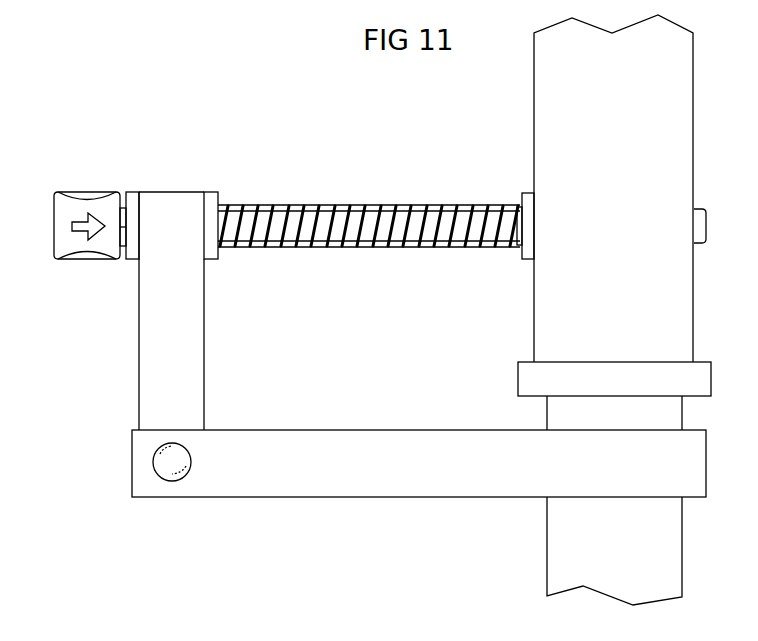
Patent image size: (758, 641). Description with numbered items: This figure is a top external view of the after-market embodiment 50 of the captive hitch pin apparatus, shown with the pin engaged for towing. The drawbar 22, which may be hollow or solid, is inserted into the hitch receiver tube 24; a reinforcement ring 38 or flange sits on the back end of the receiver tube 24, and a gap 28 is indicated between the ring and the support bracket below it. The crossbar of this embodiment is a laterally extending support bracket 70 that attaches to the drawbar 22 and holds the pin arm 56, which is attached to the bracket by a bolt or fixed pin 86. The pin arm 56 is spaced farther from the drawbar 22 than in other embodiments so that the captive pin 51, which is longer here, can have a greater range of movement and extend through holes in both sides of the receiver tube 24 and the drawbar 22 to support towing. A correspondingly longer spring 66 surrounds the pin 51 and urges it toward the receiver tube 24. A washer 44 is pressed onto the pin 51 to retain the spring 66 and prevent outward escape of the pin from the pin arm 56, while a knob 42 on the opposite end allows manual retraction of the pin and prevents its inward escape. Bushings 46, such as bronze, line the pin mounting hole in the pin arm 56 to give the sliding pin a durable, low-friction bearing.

The drawbar 22 is at (631, 549).
The hitch receiver tube 24 is at (631, 151).
The gap between members 28 is at (530, 416).
The reinforcement ring 38 is at (521, 362).
The knob 42 is at (62, 204).
The washer 44 is at (522, 196).
The bushings 46 is at (132, 198).
The after-market embodiment 50 is at (90, 349).
The captive pin 51 is at (405, 212).
The pin arm 56 is at (204, 344).
The spring 66 is at (337, 207).
The support bracket 70 is at (361, 443).
The fixed pin 86 is at (191, 463).